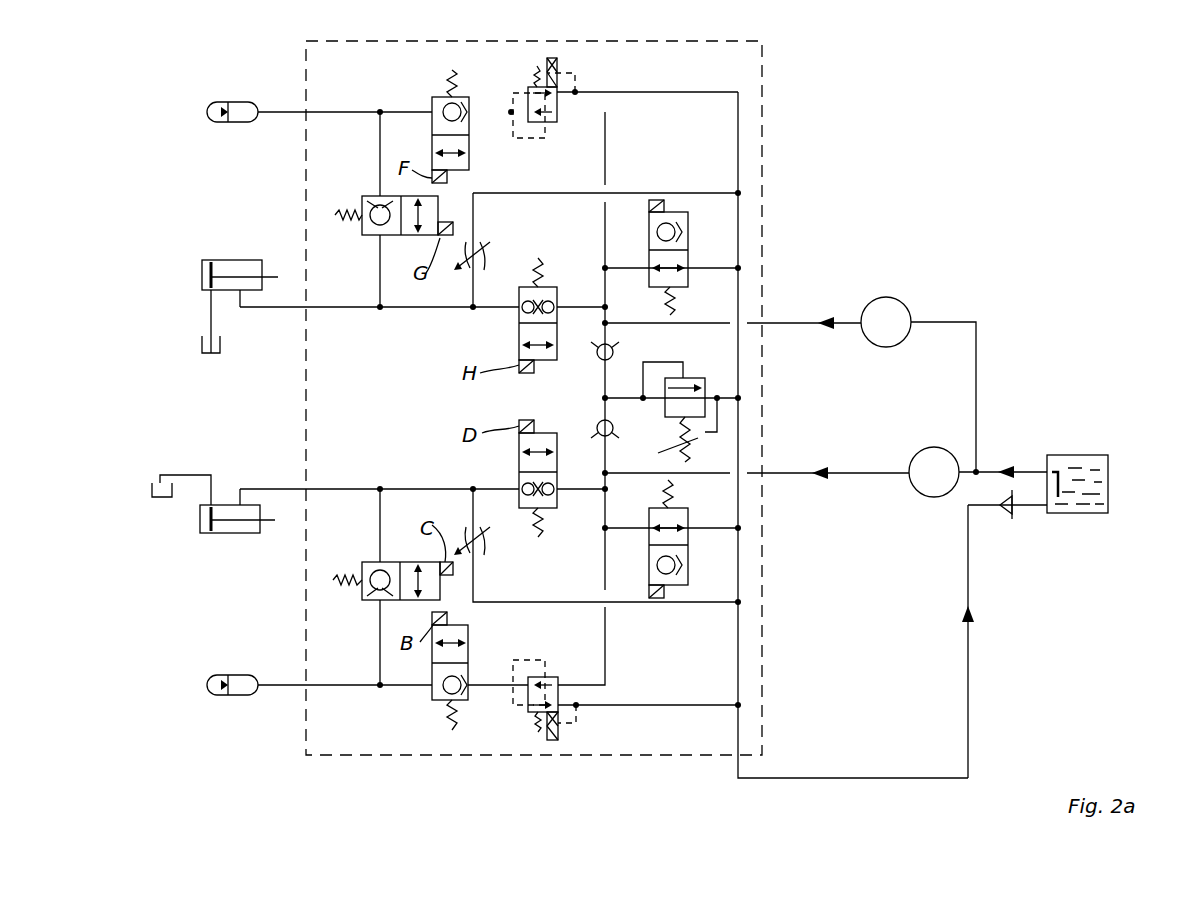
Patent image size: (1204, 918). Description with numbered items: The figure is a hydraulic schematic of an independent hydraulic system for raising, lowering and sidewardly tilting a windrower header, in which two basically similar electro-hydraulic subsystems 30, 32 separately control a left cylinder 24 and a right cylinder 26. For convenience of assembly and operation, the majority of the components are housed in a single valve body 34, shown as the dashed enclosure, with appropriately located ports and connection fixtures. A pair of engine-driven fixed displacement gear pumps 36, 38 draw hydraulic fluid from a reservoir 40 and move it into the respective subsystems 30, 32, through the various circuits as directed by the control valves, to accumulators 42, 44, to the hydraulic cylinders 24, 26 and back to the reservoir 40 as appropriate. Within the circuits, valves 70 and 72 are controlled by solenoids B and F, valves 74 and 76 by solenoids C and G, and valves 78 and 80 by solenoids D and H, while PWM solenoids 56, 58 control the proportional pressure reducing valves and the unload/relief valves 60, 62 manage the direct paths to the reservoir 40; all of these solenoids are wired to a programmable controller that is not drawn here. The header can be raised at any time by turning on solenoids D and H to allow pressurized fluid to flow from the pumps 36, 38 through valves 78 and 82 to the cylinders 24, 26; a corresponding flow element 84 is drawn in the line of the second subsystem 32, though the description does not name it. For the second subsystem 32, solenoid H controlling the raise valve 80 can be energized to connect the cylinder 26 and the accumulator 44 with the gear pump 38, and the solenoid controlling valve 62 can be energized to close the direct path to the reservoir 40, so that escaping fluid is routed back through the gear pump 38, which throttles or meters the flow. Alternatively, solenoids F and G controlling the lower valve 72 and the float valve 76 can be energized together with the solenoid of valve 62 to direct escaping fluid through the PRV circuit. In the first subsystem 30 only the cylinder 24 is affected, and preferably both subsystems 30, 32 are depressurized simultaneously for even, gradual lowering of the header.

The left cylinder 24 is at (262, 532).
The right cylinder 26 is at (262, 260).
The electro-hydraulic subsystem 30 is at (418, 458).
The electro-hydraulic subsystem 32 is at (428, 322).
The valve body 34 is at (485, 757).
The fixed displacement gear pump 36 is at (920, 496).
The fixed displacement gear pump 38 is at (880, 348).
The reservoir 40 is at (1082, 515).
The accumulator 42 is at (218, 674).
The accumulator 44 is at (228, 122).
The PWM solenoid 56 is at (558, 733).
The PWM solenoid 58 is at (557, 68).
The unload/relief valve 60 is at (690, 577).
The unload/relief valve 62 is at (690, 290).
The valve 70 is at (469, 655).
The lower valve 72 is at (469, 150).
The valve 74 is at (368, 602).
The float valve 76 is at (368, 237).
The valve 78 is at (557, 498).
The raise valve 80 is at (557, 352).
The valve 82 is at (490, 556).
The variable flow restrictor 84 is at (490, 262).